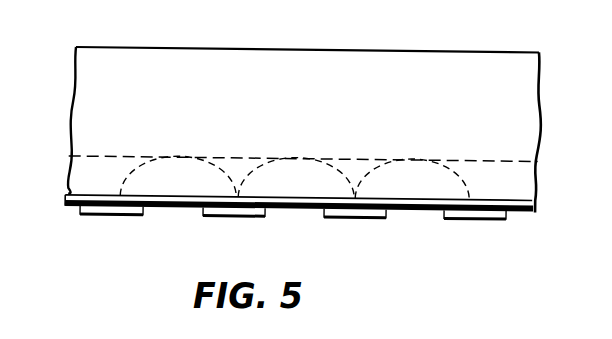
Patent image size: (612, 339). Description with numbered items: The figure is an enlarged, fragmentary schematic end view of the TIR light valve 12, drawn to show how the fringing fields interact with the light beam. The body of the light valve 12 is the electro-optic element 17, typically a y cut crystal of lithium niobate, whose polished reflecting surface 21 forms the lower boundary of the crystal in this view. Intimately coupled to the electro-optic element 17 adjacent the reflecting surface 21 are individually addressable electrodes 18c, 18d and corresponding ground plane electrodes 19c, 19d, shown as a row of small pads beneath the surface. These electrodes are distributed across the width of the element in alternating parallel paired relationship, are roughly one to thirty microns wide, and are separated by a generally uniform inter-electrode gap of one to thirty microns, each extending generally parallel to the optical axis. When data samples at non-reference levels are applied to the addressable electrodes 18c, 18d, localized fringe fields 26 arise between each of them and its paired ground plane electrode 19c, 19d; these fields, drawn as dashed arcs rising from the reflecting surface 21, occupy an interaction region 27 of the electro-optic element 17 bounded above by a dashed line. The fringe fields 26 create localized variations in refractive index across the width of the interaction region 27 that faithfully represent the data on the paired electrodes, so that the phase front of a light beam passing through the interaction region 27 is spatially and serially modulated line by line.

The light valve 12 is at (551, 62).
The electro-optic element 17 is at (311, 56).
The reflecting surface 21 is at (64, 196).
The localized fringe fields 26 is at (254, 188).
The interaction region 27 is at (522, 190).
The ground plane electrode 19c is at (128, 216).
The individually addressable electrode 18c is at (242, 217).
The ground plane electrode 19d is at (342, 220).
The individually addressable electrode 18d is at (468, 221).